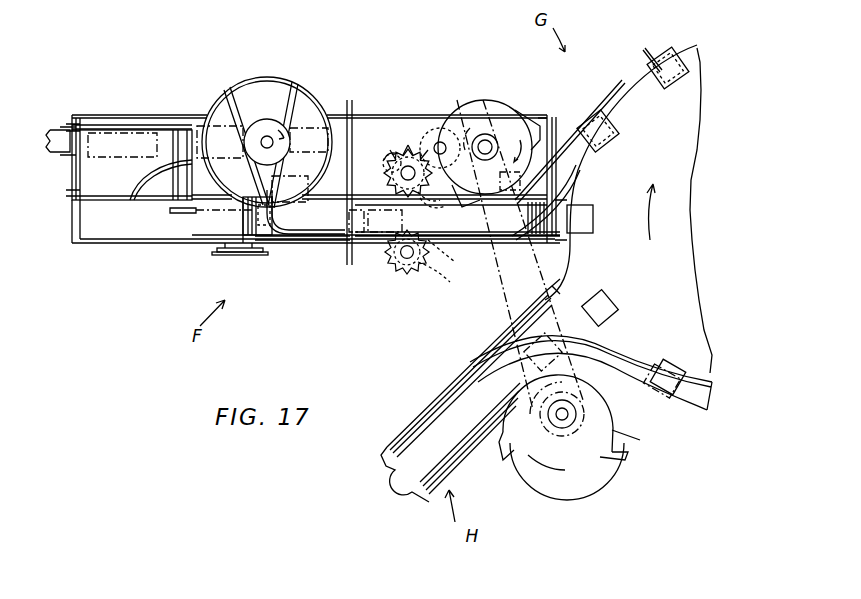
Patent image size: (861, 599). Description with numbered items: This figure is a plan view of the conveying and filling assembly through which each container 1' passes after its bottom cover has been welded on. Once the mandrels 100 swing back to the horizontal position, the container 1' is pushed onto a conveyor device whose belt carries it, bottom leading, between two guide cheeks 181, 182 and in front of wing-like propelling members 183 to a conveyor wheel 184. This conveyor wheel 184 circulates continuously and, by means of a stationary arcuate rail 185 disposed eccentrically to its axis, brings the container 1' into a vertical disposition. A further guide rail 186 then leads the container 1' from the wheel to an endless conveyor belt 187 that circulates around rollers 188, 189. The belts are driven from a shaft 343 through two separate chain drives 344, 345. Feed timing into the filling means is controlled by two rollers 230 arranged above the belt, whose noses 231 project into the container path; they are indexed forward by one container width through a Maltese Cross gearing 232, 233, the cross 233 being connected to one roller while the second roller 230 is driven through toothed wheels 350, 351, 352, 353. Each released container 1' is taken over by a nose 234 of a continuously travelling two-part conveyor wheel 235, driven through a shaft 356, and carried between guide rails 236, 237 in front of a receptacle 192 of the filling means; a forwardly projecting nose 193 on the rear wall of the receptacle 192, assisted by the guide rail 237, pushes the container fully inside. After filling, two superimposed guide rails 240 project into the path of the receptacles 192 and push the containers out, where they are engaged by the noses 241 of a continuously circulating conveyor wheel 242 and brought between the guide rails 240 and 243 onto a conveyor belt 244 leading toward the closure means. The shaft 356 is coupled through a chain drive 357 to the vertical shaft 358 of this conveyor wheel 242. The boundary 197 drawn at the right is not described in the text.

The mandrel 100 is at (58, 136).
The container 1' is at (384, 199).
The guide cheek 181 is at (142, 186).
The guide cheek 182 is at (128, 128).
The wing-like propelling member 183 is at (222, 92).
The conveyor wheel 184 is at (262, 122).
The stationary arcuate rail 185 is at (318, 104).
The guide rail 186 is at (285, 210).
The endless conveyor belt 187 is at (340, 243).
The roller 188 is at (275, 240).
The roller 189 is at (556, 240).
The receptacle 192 is at (632, 133).
The nose 193 is at (640, 48).
The drum 197 is at (694, 40).
The roller 230 is at (396, 150).
The nose 231 is at (412, 150).
The Maltese Cross gearing 232 is at (446, 128).
The cross 233 is at (385, 160).
The nose 234 is at (474, 90).
The two-part conveyor wheel 235 is at (512, 108).
The guide rail 236 is at (514, 234).
The guide rail 237 is at (608, 72).
The guide rail 240 is at (640, 352).
The nose 241 is at (502, 460).
The conveyor wheel 242 is at (594, 470).
The guide rail 243 is at (420, 500).
The conveyor belt 244 is at (405, 484).
The shaft 343 is at (236, 255).
The chain drive 344 is at (210, 228).
The chain drive 345 is at (262, 252).
The toothed wheel 350 is at (404, 150).
The toothed wheel 351 is at (436, 206).
The toothed wheel 352 is at (452, 258).
The toothed wheel 353 is at (443, 276).
The shaft 356 is at (486, 132).
The chain drive 357 is at (502, 290).
The vertical shaft 358 is at (568, 426).